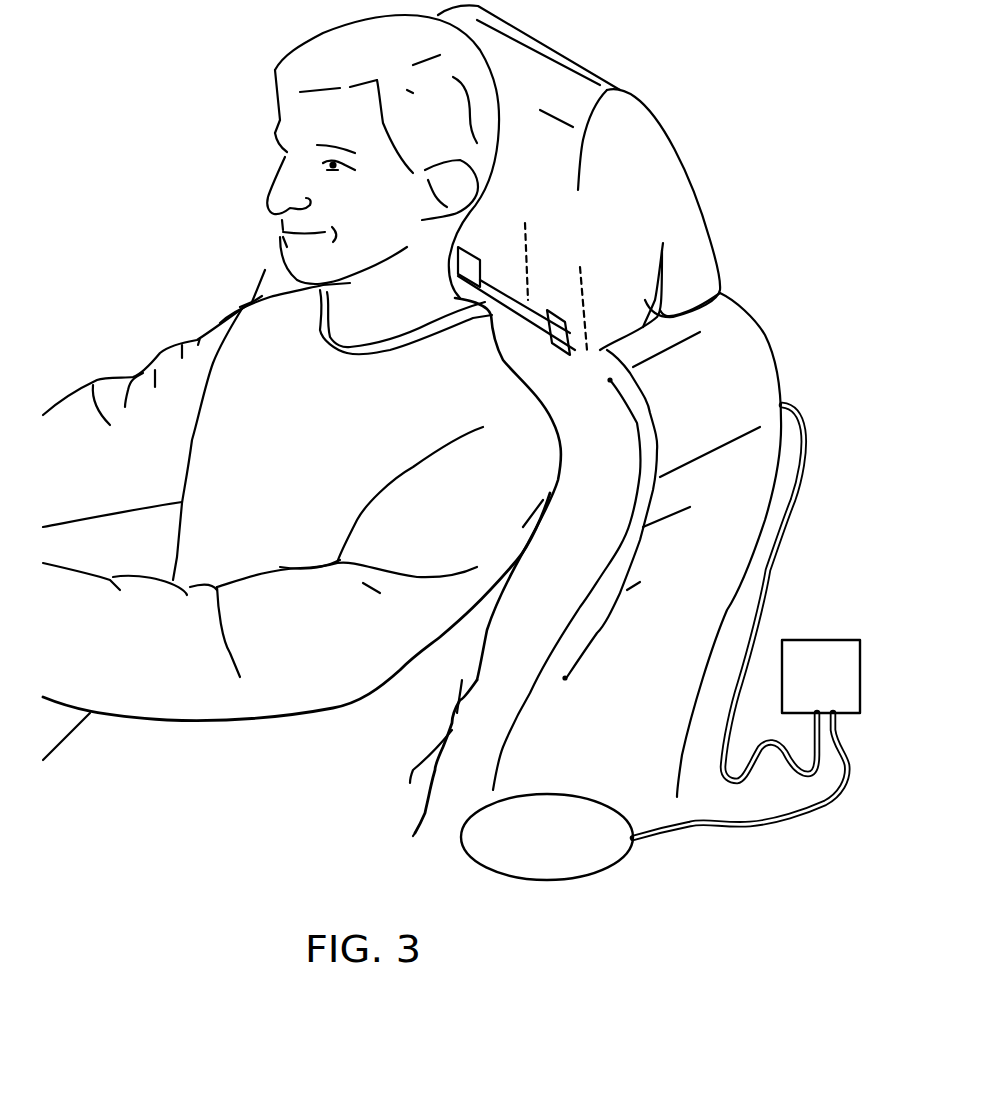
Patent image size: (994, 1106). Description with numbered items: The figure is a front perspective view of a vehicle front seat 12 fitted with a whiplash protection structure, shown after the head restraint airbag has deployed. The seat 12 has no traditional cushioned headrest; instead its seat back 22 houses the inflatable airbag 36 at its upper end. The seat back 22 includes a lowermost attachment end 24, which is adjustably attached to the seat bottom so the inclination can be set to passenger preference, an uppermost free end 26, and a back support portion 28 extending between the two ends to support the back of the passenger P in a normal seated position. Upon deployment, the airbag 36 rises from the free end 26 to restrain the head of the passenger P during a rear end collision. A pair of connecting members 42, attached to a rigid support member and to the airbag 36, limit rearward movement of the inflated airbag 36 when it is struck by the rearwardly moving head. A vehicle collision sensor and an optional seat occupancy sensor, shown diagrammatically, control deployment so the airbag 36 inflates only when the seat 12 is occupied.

The front seat 12 is at (632, 442).
The seat back 22 is at (780, 357).
The attachment end 24 is at (481, 741).
The free end 26 is at (733, 347).
The back support portion 28 is at (707, 567).
The inflatable airbag 36 is at (577, 60).
The connecting members 42 is at (553, 338).
The passenger P is at (207, 281).